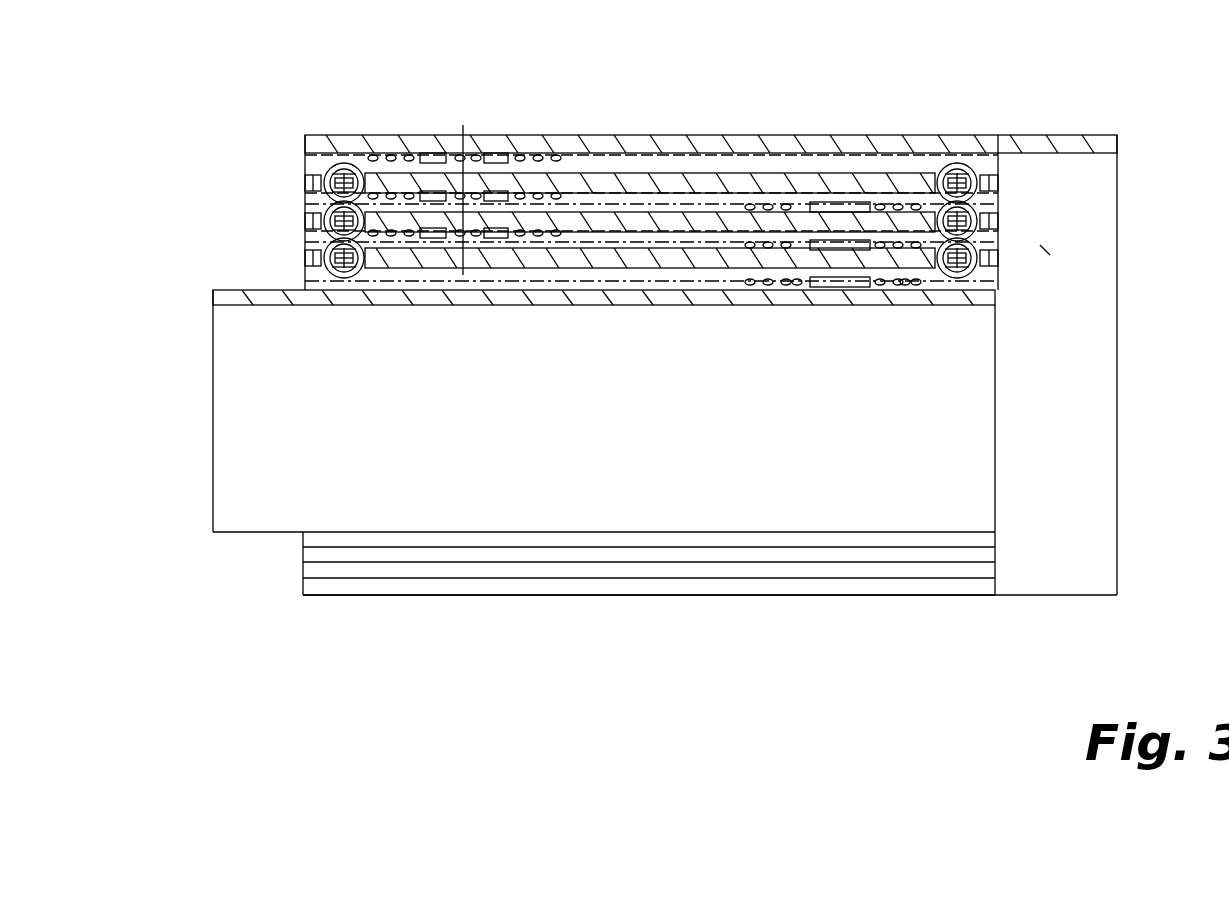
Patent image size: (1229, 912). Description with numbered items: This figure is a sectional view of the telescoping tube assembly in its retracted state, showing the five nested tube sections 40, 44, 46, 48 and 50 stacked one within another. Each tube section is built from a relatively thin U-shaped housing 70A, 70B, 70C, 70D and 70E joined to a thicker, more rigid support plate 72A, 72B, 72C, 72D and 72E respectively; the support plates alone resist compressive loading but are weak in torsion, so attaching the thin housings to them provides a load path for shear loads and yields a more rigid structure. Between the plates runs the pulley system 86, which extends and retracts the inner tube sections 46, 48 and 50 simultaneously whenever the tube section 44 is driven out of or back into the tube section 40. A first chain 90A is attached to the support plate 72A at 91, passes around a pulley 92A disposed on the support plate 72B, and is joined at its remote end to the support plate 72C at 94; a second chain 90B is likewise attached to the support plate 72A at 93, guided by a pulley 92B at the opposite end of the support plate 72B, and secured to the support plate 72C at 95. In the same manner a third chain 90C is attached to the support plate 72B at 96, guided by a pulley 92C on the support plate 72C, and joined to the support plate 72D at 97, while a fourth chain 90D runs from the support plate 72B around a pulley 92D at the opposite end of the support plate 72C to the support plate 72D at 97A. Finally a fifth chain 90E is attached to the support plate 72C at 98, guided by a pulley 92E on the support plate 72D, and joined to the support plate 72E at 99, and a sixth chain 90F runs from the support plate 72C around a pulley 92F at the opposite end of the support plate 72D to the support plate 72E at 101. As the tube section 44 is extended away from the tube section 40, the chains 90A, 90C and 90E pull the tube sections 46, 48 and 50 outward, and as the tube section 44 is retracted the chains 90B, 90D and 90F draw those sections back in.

The tube section 40 is at (1132, 168).
The tube section 44 is at (1003, 182).
The tube section 46 is at (1004, 222).
The tube section 48 is at (1004, 268).
The tube section 50 is at (1005, 322).
The pulley system 86 is at (1046, 250).
The U-shaped housing 70A is at (700, 592).
The U-shaped housing 70B is at (605, 578).
The U-shaped housing 70C is at (535, 565).
The U-shaped housing 70D is at (455, 550).
The U-shaped housing 70E is at (370, 535).
The support plate 72A is at (1120, 138).
The support plate 72B is at (668, 152).
The support plate 72C is at (640, 212).
The support plate 72D is at (703, 250).
The support plate 72E is at (233, 290).
The first chain 90A is at (392, 158).
The second chain 90B is at (520, 158).
The third chain 90C is at (383, 197).
The fourth chain 90D is at (548, 197).
The fifth chain 90E is at (405, 240).
The sixth chain 90F is at (530, 240).
The attachment point of first chain 91 is at (440, 165).
The pulley 92A is at (326, 170).
The pulley 92B is at (965, 165).
The pulley 92C is at (326, 212).
The pulley 92D is at (975, 225).
The pulley 92E is at (326, 272).
The pulley 92F is at (990, 272).
The attachment point of second chain 93 is at (488, 158).
The attachment point of first chain remote end 94 is at (800, 207).
The attachment point of second chain 95 is at (905, 207).
The attachment point of third chain 96 is at (405, 170).
The attachment point of third chain remote end 97 is at (770, 282).
The attachment point of fourth chain 97A is at (880, 245).
The attachment point of fifth chain 98 is at (450, 245).
The attachment point of fifth chain remote end 99 is at (795, 283).
The attachment point of sixth chain 101 is at (905, 283).